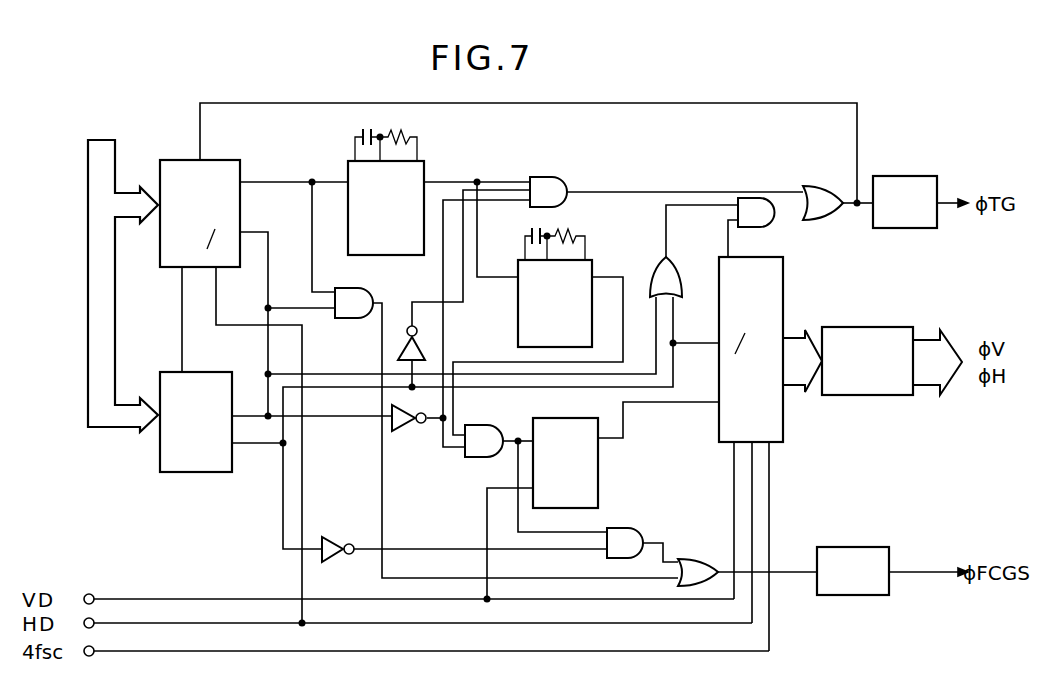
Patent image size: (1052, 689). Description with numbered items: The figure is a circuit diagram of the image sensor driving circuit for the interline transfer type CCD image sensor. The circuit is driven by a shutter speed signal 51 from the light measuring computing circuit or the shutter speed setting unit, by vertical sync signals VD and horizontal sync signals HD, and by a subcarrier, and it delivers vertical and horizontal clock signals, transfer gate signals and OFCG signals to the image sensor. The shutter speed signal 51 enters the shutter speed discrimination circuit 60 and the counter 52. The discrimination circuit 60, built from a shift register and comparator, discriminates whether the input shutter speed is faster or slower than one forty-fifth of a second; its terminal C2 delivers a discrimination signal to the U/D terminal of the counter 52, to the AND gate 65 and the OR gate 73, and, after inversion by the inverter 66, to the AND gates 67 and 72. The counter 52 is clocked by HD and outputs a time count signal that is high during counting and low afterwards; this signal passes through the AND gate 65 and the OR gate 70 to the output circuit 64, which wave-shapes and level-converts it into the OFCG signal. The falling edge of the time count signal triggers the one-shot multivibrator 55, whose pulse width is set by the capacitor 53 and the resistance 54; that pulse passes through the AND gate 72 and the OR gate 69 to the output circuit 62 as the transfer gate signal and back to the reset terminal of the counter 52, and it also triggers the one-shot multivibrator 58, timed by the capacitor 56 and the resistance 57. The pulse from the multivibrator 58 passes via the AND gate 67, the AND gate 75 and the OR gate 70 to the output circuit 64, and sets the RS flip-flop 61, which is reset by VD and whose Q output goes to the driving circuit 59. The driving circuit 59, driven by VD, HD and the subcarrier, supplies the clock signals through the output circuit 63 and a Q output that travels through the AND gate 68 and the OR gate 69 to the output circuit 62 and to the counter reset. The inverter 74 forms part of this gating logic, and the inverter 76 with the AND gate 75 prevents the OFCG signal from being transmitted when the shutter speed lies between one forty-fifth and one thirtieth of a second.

The shutter speed signal 51 is at (88, 168).
The counter 52 is at (226, 160).
The capacitor 53 is at (363, 132).
The resistance 54 is at (408, 135).
The one-shot multivibrator 55 is at (424, 166).
The capacitor 56 is at (530, 231).
The resistance 57 is at (568, 229).
The one-shot multivibrator 58 is at (592, 266).
The driving circuit 59 is at (784, 276).
The shutter speed discrimination circuit 60 is at (218, 372).
The RS flip-flop 61 is at (600, 490).
The output circuit 62 is at (912, 176).
The output circuit 63 is at (872, 327).
The output circuit 64 is at (854, 547).
The AND gate 65 is at (370, 294).
The inverter 66 is at (404, 432).
The AND gate 67 is at (490, 426).
The AND gate 68 is at (776, 221).
The OR gate 69 is at (823, 188).
The OR gate 70 is at (697, 559).
The AND gate 72 is at (558, 178).
The OR gate 73 is at (675, 264).
The inverter 74 is at (398, 353).
The AND gate 75 is at (632, 528).
The inverter 76 is at (338, 537).